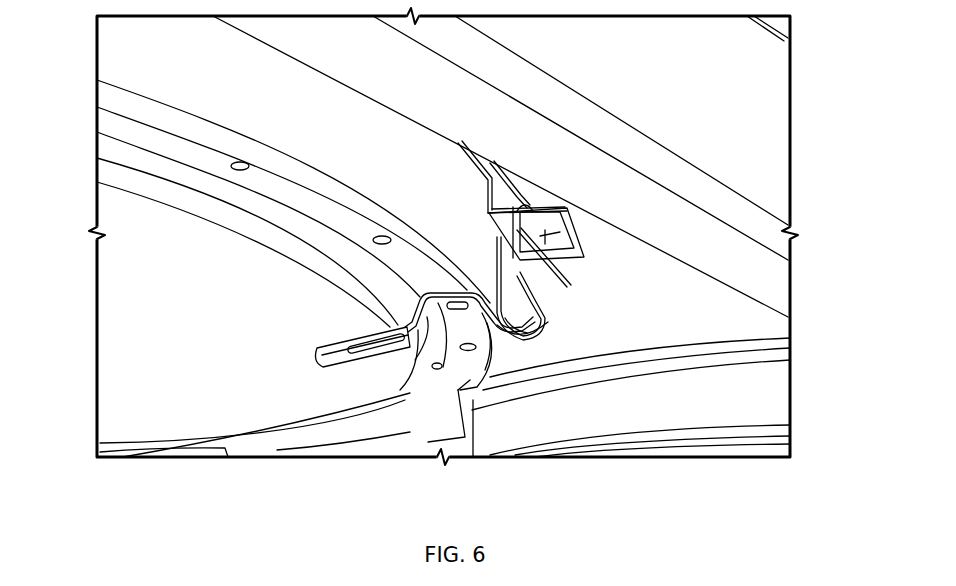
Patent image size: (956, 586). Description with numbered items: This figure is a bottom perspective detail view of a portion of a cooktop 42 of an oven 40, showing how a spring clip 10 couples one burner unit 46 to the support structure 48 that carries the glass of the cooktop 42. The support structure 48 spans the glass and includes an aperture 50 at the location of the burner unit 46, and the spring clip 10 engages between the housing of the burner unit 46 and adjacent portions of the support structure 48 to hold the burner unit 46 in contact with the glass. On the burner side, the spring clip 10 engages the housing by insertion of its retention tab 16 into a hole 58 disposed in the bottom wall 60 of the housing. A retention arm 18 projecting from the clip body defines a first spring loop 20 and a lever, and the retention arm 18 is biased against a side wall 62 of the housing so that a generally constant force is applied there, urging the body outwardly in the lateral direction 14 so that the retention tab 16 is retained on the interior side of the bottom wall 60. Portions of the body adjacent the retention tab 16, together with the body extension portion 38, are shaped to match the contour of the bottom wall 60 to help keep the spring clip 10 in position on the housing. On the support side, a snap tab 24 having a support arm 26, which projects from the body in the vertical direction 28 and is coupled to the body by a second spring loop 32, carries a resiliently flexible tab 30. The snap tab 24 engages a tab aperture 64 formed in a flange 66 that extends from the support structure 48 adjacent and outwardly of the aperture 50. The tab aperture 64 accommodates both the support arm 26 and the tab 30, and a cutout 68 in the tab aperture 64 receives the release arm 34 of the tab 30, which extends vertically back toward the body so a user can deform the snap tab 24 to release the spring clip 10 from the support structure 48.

The spring clip 10 is at (411, 291).
The lateral direction 14 is at (387, 317).
The retention tab 16 is at (458, 327).
The retention arm 18 is at (530, 327).
The first spring loop 20 is at (513, 310).
The snap tab 24 is at (536, 199).
The support arm 26 is at (527, 207).
The vertical direction 28 is at (610, 230).
The tab 30 is at (567, 195).
The second spring loop 32 is at (527, 330).
The release arm 34 is at (567, 272).
The body extension portion 38 is at (330, 358).
The oven 40 is at (744, 391).
The cooktop 42 is at (727, 218).
The burner unit 46 is at (191, 337).
The support structure 48 is at (663, 303).
The aperture 50 is at (433, 150).
The hole 58 is at (385, 234).
The bottom wall 60 is at (312, 207).
The side wall 62 is at (323, 103).
The tab aperture 64 is at (535, 247).
The flange 66 is at (567, 230).
The cutout 68 is at (537, 198).